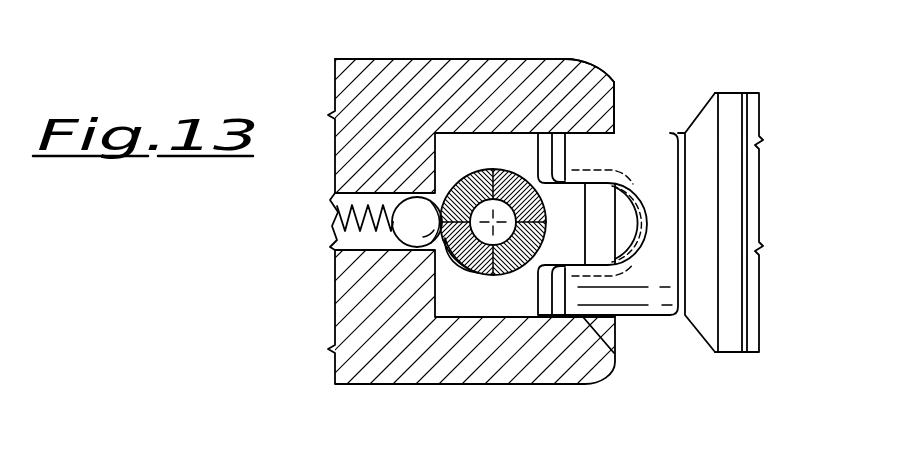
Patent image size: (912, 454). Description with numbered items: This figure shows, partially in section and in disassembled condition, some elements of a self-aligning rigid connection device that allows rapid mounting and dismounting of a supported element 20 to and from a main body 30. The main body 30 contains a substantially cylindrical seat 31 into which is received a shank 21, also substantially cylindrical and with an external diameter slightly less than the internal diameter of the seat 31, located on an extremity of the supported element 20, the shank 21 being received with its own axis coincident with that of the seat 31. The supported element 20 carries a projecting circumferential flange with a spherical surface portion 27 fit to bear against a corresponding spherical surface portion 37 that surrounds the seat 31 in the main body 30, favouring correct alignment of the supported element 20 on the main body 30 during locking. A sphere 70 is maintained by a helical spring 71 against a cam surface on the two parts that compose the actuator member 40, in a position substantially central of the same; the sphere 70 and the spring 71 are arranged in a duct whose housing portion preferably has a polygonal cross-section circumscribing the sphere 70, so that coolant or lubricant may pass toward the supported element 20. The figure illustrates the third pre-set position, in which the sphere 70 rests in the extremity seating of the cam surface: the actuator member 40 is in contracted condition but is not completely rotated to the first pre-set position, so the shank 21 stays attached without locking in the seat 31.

The supported element 20 is at (757, 208).
The shank 21 is at (645, 293).
The spherical surface portion 27 is at (708, 104).
The main body 30 is at (372, 363).
The seat 31 is at (488, 302).
The spherical surface portion 37 is at (607, 108).
The actuator member 40 is at (494, 212).
The sphere 70 is at (393, 274).
The helical spring 71 is at (338, 229).